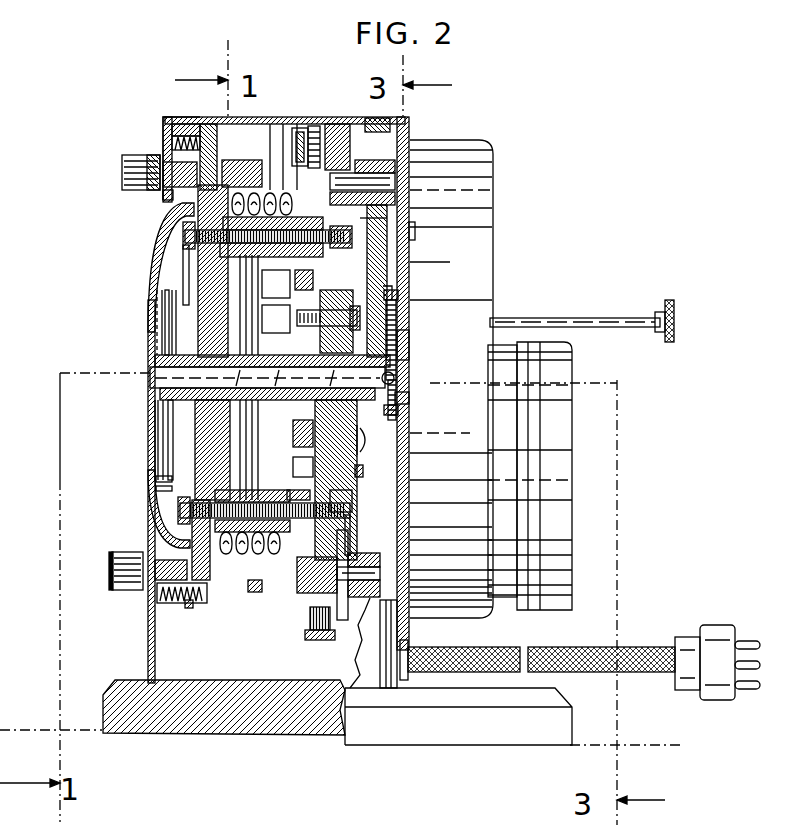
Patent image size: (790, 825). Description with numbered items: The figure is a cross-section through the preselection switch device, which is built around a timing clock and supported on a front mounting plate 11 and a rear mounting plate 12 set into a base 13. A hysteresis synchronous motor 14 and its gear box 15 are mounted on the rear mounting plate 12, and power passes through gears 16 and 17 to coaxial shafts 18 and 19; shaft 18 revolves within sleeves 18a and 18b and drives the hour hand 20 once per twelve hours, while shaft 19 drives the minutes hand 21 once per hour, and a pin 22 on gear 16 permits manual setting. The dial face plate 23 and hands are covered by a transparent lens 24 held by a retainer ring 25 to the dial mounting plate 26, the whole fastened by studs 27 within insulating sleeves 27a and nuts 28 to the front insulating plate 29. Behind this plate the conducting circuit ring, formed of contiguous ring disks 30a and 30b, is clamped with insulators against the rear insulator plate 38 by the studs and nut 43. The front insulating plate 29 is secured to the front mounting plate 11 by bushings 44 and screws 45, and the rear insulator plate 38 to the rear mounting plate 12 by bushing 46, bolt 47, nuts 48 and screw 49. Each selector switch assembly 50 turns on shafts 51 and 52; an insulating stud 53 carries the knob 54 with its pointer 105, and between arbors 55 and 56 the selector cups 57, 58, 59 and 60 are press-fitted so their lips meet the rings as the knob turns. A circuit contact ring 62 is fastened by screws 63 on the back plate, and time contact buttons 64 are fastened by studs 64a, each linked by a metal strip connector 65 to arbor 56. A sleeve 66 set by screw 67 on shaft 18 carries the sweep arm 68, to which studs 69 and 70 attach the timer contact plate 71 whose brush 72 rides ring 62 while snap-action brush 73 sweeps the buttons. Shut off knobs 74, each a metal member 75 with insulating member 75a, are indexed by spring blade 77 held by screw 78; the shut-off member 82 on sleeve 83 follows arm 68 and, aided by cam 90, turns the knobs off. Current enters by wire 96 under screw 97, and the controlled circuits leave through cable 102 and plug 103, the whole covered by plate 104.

The front mounting plate 11 is at (147, 660).
The rear mounting plate 12 is at (409, 345).
The base 13 is at (373, 727).
The motor 14 is at (566, 353).
The gear box 15 is at (480, 272).
The gear 16 is at (400, 301).
The gear 17 is at (400, 411).
The shaft 18 is at (147, 363).
The sleeve 18a is at (147, 353).
The sleeve 18b is at (410, 398).
The shaft 19 is at (148, 381).
The hour hand 20 is at (163, 450).
The minutes hand 21 is at (237, 468).
The pin 22 is at (605, 313).
The dial face plate 23 is at (197, 287).
The transparent lens 24 is at (160, 333).
The retainer ring 25 is at (172, 201).
The dial mounting plate 26 is at (160, 307).
The studs 27 is at (186, 232).
The insulating sleeves 27a is at (478, 237).
The nuts 28 is at (190, 247).
The front insulating plate 29 is at (193, 429).
The ring disk 30a is at (158, 479).
The ring disk 30b is at (157, 488).
The rear insulator plate 38 is at (313, 633).
The nut 43 is at (352, 503).
The bushings 44 is at (189, 122).
The screws 45 is at (230, 127).
The bushing 46 is at (390, 126).
The bolt 47 is at (313, 125).
The nuts 48 is at (323, 128).
The screw 49 is at (408, 150).
The selector switch assembly 50 is at (223, 592).
The shaft 51 is at (165, 197).
The shaft 52 is at (393, 181).
The insulating stud 53 is at (177, 160).
The knob 54 is at (121, 170).
The arbor 55 is at (229, 167).
The arbor 56 is at (395, 198).
The selector cup 57 is at (270, 120).
The selector cup 58 is at (283, 120).
The selector cup 59 is at (297, 120).
The selector cup 60 is at (270, 160).
The circuit contact ring 62 is at (343, 377).
The screws 63 is at (400, 324).
The time contact buttons 64 is at (388, 265).
The studs 64a is at (350, 464).
The metal strip connectors 65 is at (360, 243).
The sleeve 66 is at (140, 346).
The screw 67 is at (289, 377).
The sweep arm 68 is at (147, 292).
The stud 69 is at (147, 317).
The stud 70 is at (187, 277).
The timer contact plate 71 is at (249, 377).
The brush 72 is at (276, 319).
The snap-action brush contact member 73 is at (276, 284).
The shut off knob 74 is at (413, 160).
The metal member 75 is at (345, 580).
The insulating member 75a is at (378, 567).
The indexing spring blade 77 is at (348, 539).
The screw 78 is at (313, 613).
The shut-off member 82 is at (383, 286).
The sleeve 83 is at (400, 366).
The cam 90 is at (387, 218).
The wire 96 is at (362, 471).
The screw 97 is at (363, 437).
The cable 102 is at (545, 647).
The plug 103 is at (723, 637).
The plate 104 is at (163, 116).
The pointer 105 is at (108, 583).